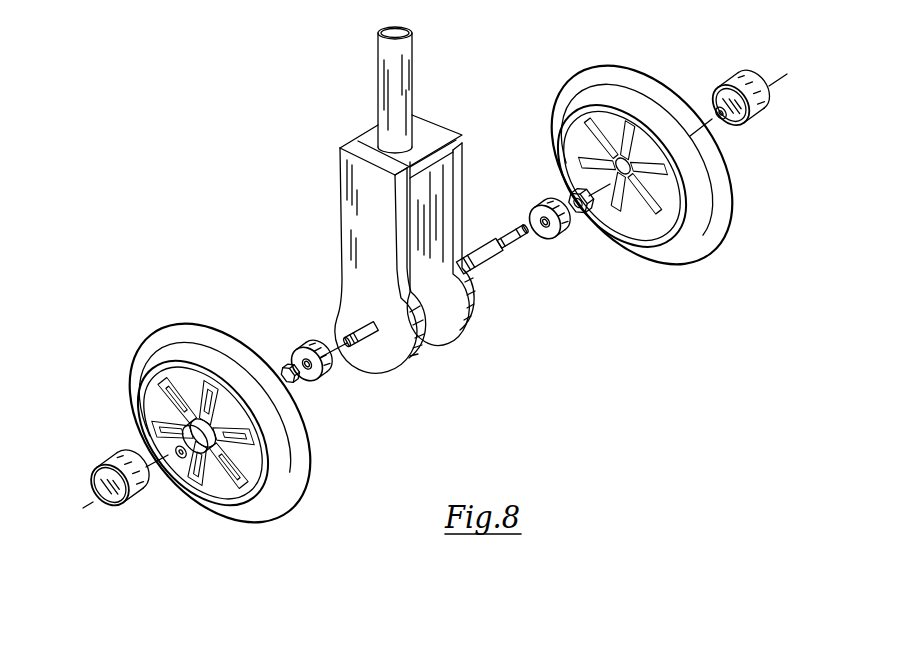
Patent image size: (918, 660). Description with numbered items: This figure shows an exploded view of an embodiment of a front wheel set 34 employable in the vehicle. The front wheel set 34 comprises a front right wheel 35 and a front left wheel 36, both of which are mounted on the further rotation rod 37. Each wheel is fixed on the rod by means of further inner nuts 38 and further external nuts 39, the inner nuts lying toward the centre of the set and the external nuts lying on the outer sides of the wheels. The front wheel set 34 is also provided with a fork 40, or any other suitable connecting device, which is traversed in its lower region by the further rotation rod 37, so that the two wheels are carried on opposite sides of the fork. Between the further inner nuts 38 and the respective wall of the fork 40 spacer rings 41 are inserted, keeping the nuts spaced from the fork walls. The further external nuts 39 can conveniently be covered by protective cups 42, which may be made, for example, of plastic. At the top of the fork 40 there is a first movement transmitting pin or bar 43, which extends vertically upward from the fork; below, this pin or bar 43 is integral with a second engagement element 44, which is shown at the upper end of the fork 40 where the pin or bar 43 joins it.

The front wheel set 34 is at (194, 148).
The front right wheel 35 is at (628, 78).
The front left wheel 36 is at (268, 486).
The further rotation rod 37 is at (484, 267).
The further inner nuts 38 is at (297, 390).
The further external nuts 39 is at (181, 453).
The fork 40 is at (353, 215).
The spacer rings 41 is at (301, 346).
The protective cups 42 is at (108, 462).
The first movement transmitting pin or bar 43 is at (388, 52).
The second engagement element 44 is at (372, 137).